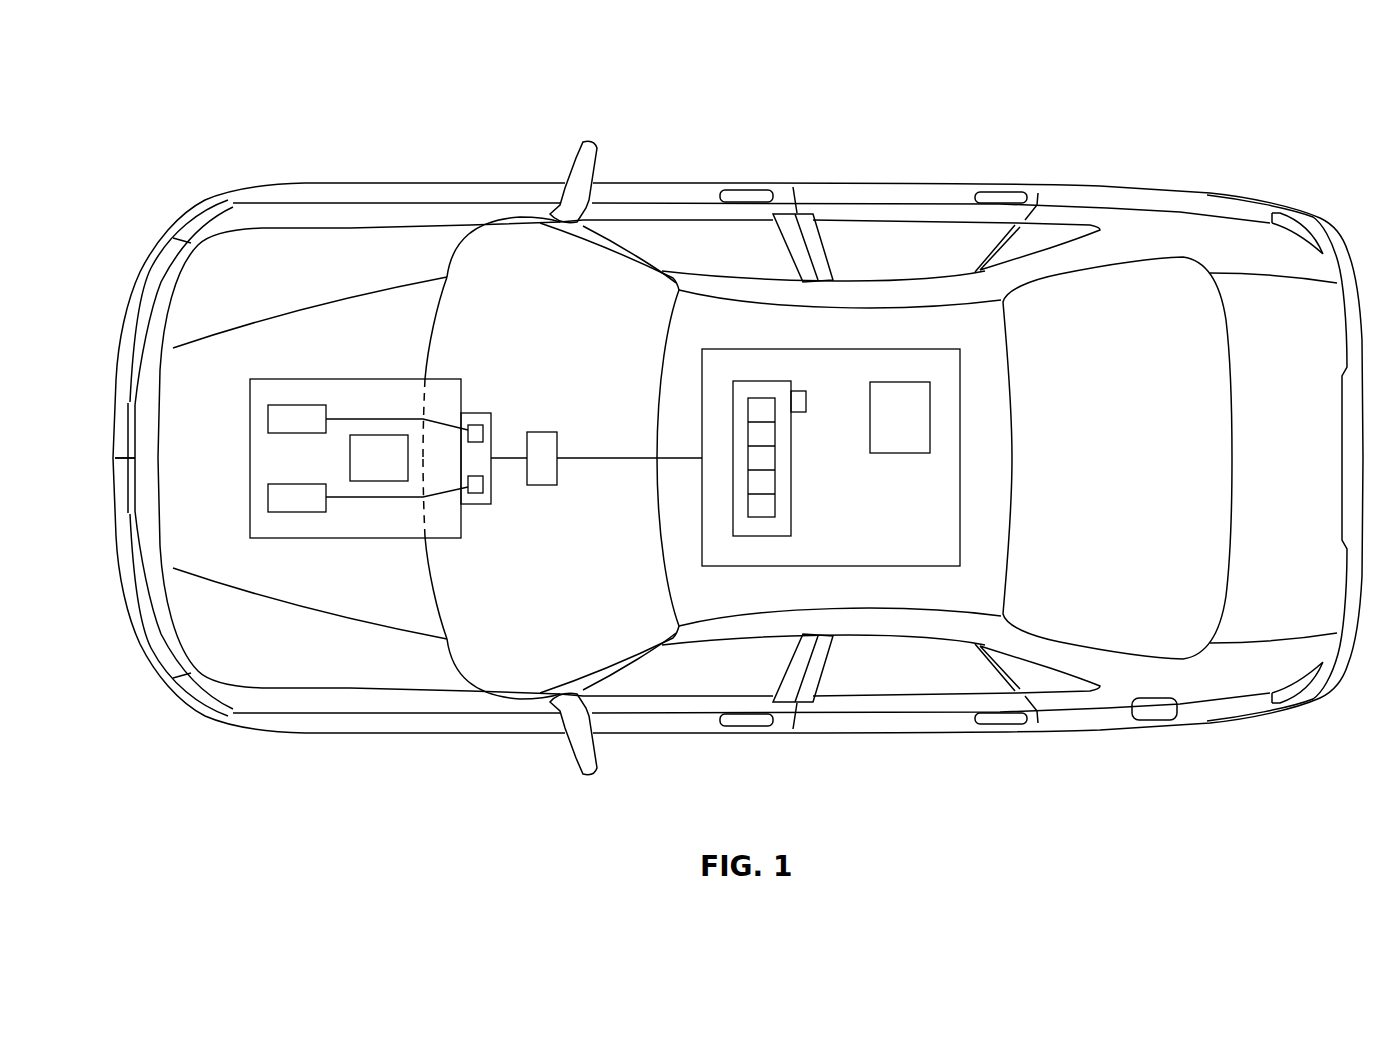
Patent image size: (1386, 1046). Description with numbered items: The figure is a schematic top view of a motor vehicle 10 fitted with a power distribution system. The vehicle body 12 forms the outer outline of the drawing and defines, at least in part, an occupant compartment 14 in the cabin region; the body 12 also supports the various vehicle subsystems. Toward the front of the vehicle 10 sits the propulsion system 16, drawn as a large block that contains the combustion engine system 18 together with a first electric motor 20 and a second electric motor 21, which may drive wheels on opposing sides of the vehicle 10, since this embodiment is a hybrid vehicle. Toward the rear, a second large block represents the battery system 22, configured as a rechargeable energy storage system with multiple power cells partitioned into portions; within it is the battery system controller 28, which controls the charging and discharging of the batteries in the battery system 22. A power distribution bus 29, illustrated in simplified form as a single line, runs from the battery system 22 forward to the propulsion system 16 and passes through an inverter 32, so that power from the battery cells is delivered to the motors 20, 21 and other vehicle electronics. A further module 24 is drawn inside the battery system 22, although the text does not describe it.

The motor vehicle 10 is at (178, 82).
The vehicle body 12 is at (797, 173).
The occupant compartment 14 is at (883, 623).
The propulsion system 16 is at (250, 455).
The combustion engine system 18 is at (390, 435).
The first electric motor 20 is at (300, 405).
The second electric motor 21 is at (297, 513).
The battery system 22 is at (737, 567).
The module 24 is at (890, 382).
The battery system controller 28 is at (775, 505).
The power distribution bus 29 is at (638, 460).
The inverter 32 is at (541, 432).